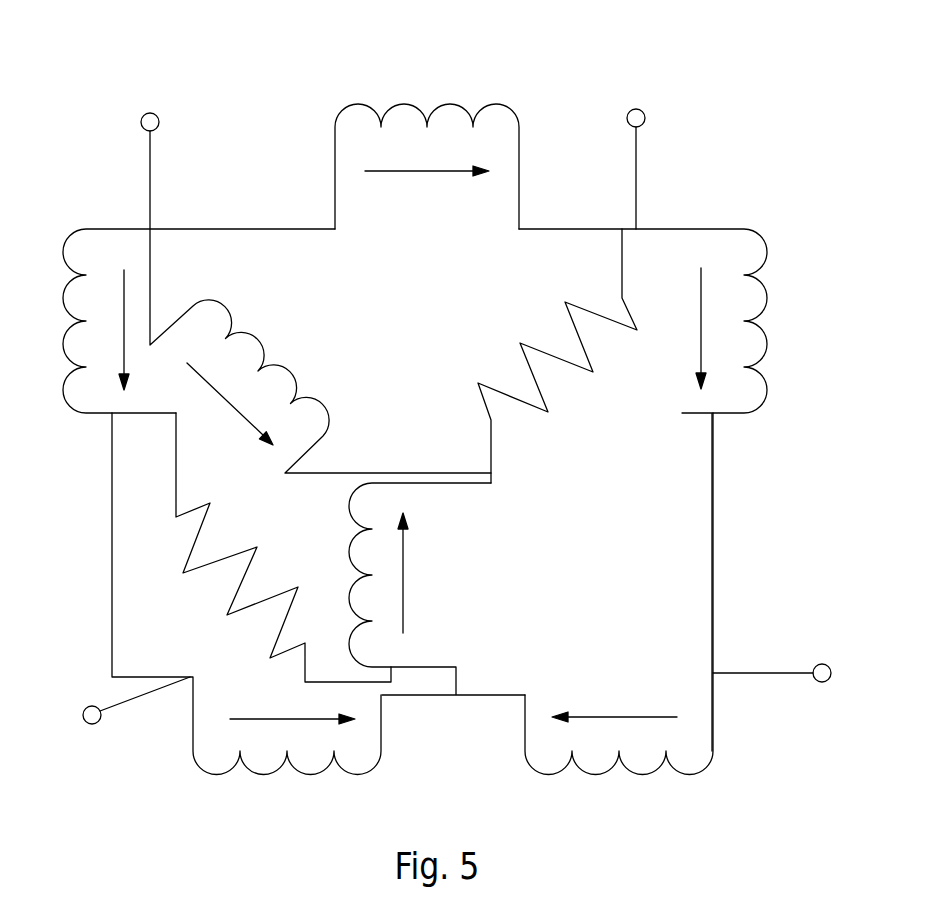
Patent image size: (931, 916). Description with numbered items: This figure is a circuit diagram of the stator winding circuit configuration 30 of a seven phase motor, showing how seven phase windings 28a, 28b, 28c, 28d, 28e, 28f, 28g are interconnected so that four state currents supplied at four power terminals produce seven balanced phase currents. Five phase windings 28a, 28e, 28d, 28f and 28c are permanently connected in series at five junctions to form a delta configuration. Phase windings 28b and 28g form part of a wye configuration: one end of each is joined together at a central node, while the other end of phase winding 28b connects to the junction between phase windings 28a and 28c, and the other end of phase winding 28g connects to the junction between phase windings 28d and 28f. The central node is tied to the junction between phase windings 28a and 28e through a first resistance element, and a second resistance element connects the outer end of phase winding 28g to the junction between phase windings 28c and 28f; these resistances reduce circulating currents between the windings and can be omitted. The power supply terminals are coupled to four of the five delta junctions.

The motor winding circuit 30 is at (694, 46).
The phase winding 28a is at (497, 101).
The phase winding 28b is at (302, 373).
The phase winding 28c is at (76, 412).
The phase winding 28d is at (713, 765).
The phase winding 28e is at (766, 240).
The phase winding 28f is at (381, 766).
The phase winding 28g is at (345, 507).